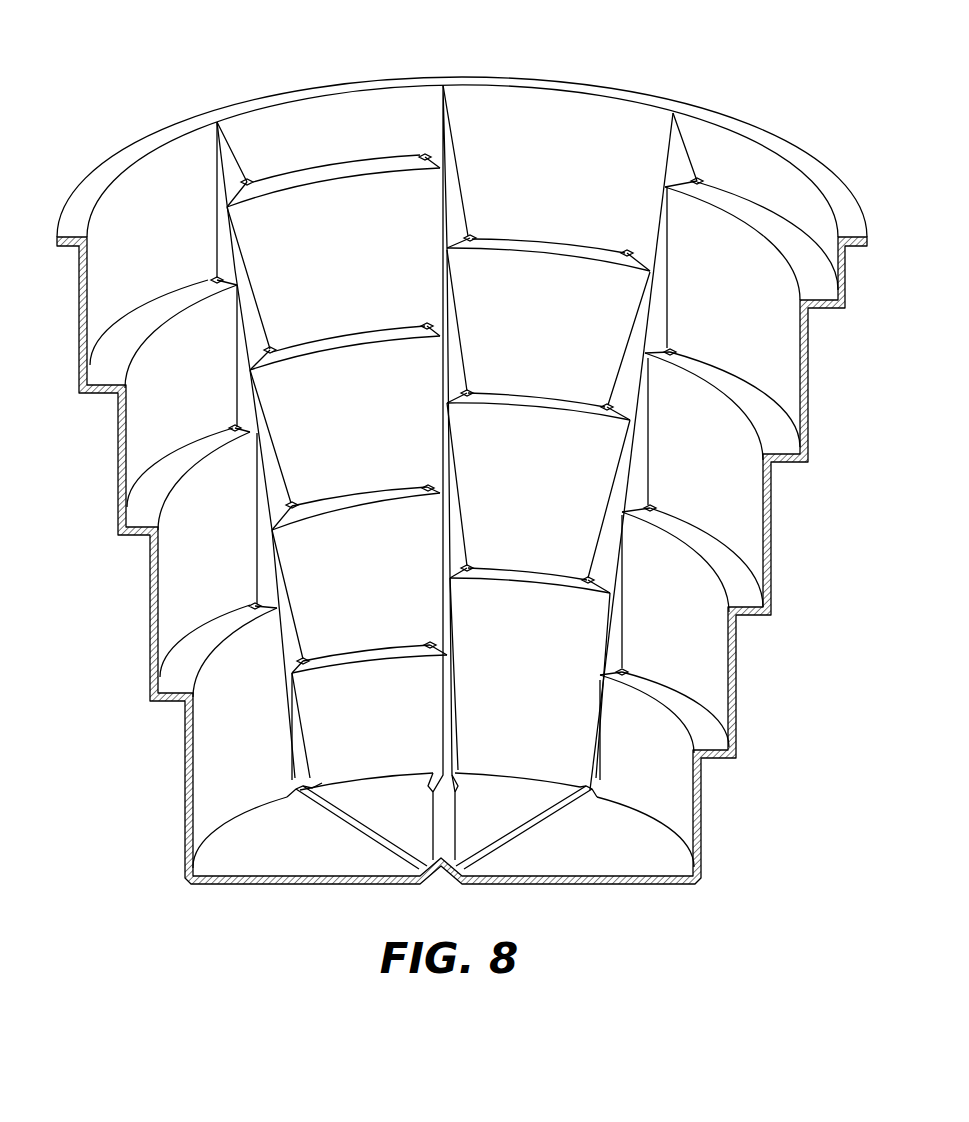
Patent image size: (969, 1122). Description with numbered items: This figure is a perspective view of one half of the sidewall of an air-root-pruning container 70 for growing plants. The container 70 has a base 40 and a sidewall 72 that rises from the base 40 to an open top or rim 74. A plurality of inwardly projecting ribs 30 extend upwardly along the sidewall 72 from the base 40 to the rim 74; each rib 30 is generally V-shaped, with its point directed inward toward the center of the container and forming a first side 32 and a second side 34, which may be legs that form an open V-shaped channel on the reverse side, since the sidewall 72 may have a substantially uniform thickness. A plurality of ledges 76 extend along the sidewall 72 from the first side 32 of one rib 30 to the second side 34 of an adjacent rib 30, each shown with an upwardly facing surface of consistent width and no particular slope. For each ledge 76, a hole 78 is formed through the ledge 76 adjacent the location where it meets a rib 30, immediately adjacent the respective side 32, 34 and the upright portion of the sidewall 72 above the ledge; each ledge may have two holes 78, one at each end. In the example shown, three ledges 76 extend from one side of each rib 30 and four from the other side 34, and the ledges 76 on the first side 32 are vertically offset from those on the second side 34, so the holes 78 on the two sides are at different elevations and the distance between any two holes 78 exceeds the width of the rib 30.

The air-root-pruning container 70 is at (144, 100).
The sidewall 72 is at (572, 105).
The rim 74 is at (805, 165).
The ledge 76 is at (147, 317).
The hole 78 is at (233, 426).
The rib 30 is at (417, 472).
The first side 32 is at (214, 240).
The second side 34 is at (231, 163).
The base 40 is at (642, 864).